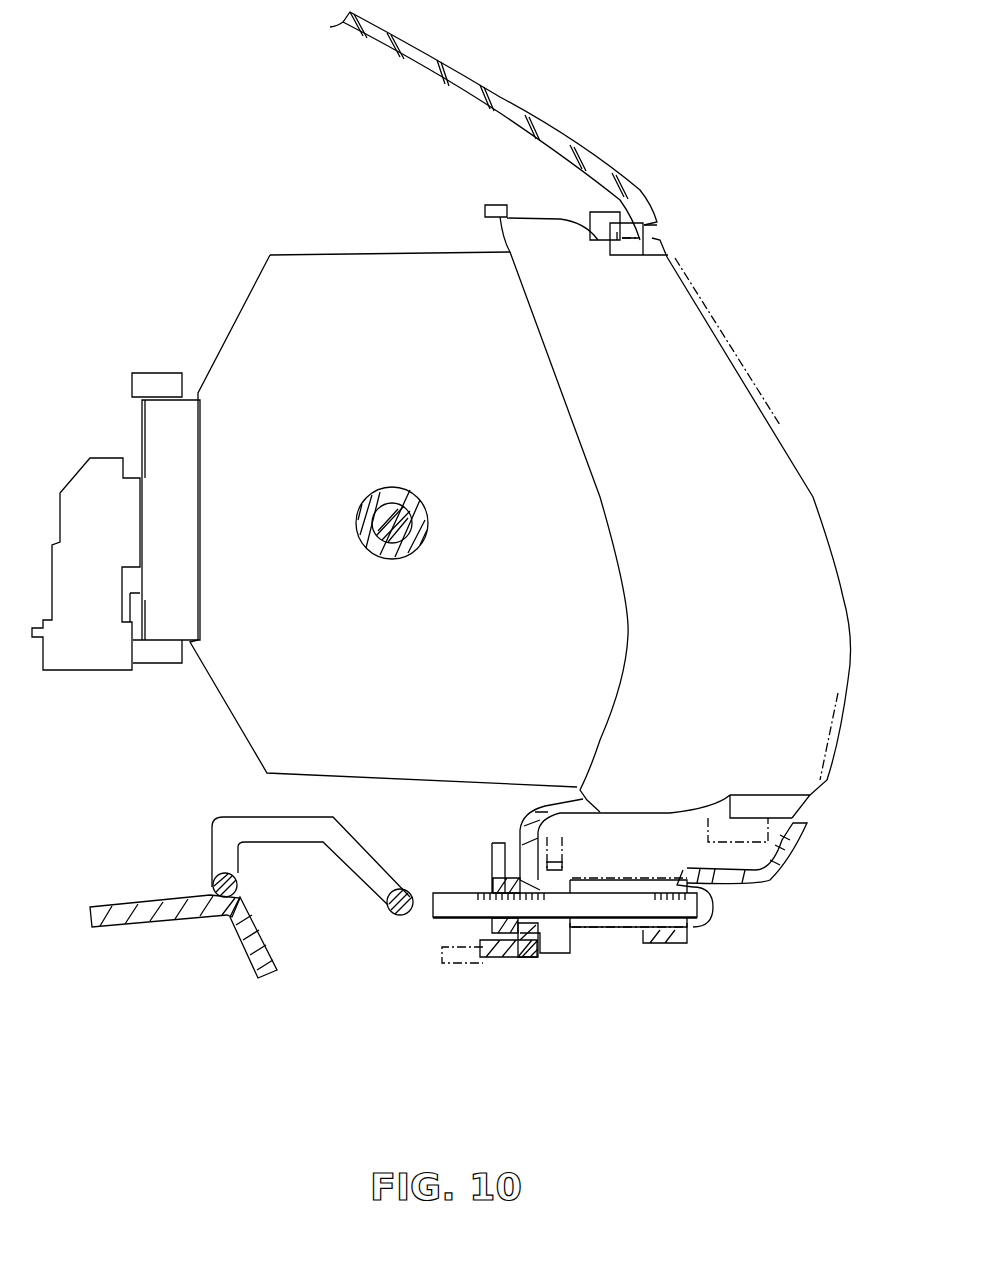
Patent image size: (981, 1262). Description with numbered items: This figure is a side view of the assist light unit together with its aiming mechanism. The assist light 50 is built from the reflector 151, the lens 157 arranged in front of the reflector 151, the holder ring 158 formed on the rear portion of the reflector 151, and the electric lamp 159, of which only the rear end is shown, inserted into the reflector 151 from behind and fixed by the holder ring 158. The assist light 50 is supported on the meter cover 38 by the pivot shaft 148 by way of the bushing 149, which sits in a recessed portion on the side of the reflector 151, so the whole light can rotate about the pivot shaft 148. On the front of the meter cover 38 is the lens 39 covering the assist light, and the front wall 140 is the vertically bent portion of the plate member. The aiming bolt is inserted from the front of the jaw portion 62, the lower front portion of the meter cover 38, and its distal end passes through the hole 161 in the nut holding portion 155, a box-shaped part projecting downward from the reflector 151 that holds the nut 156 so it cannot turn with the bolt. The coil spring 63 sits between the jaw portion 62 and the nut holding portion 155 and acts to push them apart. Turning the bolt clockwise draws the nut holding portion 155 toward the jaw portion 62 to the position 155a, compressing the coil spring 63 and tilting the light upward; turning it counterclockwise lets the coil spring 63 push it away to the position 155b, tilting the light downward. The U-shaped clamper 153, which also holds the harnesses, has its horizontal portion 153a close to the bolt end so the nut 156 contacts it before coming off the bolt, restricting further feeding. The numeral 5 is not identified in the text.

The meter cover 38 is at (557, 117).
The assist light 50 is at (240, 743).
The reflector 151 is at (350, 640).
The lens 157 is at (843, 590).
The jaw portion 62 is at (783, 867).
The holder ring 158 is at (148, 426).
The electric lamp 159 is at (90, 660).
The bushing 149 is at (403, 490).
The pivot shaft 148 is at (400, 518).
The clamper 153 is at (360, 815).
The horizontal portion 153a is at (387, 912).
The lens 39 is at (143, 903).
The front wall 140 is at (243, 943).
The bolt 5 is at (705, 920).
The coil spring 63 is at (598, 930).
The nut 156 is at (490, 887).
The hole 161 is at (545, 880).
The nut holding portion 155 is at (520, 955).
The nut holding portion position 155a is at (570, 945).
The nut holding portion position 155b is at (480, 965).